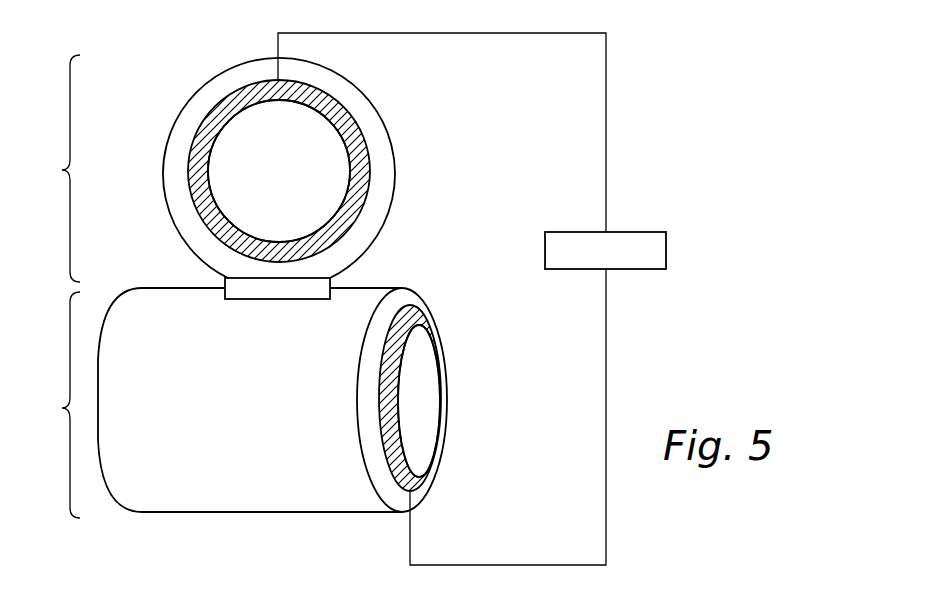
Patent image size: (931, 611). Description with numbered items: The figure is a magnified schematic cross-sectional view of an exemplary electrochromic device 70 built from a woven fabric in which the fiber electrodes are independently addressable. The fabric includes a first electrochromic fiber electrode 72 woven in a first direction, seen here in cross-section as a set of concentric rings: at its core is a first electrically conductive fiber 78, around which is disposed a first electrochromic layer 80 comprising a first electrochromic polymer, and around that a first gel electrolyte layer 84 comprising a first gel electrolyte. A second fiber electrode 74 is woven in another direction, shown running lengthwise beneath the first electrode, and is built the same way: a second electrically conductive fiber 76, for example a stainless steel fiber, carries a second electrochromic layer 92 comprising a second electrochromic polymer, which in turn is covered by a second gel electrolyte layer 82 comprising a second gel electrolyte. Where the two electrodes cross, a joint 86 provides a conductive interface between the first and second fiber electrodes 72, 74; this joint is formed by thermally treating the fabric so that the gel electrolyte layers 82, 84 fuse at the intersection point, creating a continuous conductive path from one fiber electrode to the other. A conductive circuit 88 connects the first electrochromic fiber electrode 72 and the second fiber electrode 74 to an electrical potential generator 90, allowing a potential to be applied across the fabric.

The electrochromic device 70 is at (686, 96).
The first electrochromic fiber electrode 72 is at (249, 195).
The second fiber electrode 74 is at (269, 402).
The second electrically conductive fiber 76 is at (412, 408).
The first electrically conductive fiber 78 is at (308, 174).
The first electrochromic layer 80 is at (202, 153).
The second gel electrolyte layer 82 is at (412, 302).
The first gel electrolyte layer 84 is at (245, 78).
The joint 86 is at (258, 292).
The conductive circuit 88 is at (566, 35).
The electrical potential generator 90 is at (637, 232).
The second electrochromic layer 92 is at (383, 377).